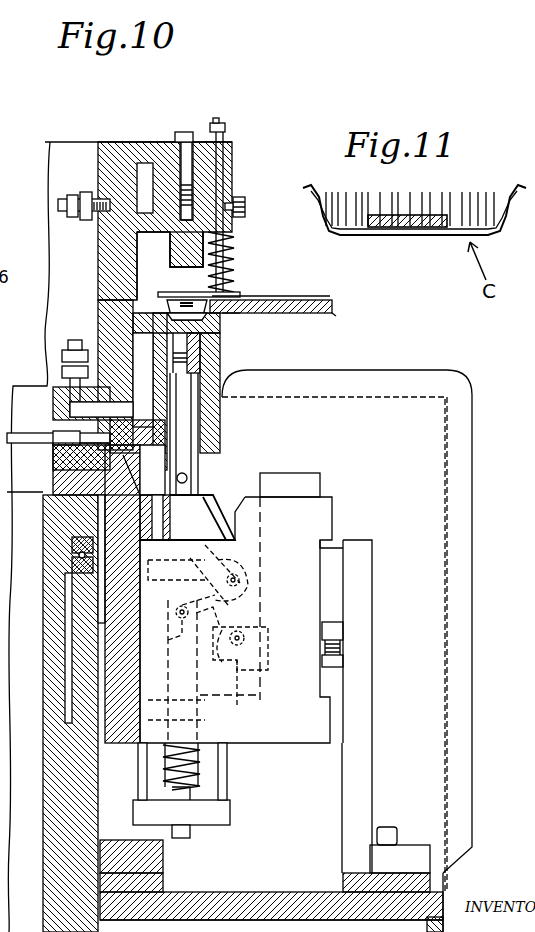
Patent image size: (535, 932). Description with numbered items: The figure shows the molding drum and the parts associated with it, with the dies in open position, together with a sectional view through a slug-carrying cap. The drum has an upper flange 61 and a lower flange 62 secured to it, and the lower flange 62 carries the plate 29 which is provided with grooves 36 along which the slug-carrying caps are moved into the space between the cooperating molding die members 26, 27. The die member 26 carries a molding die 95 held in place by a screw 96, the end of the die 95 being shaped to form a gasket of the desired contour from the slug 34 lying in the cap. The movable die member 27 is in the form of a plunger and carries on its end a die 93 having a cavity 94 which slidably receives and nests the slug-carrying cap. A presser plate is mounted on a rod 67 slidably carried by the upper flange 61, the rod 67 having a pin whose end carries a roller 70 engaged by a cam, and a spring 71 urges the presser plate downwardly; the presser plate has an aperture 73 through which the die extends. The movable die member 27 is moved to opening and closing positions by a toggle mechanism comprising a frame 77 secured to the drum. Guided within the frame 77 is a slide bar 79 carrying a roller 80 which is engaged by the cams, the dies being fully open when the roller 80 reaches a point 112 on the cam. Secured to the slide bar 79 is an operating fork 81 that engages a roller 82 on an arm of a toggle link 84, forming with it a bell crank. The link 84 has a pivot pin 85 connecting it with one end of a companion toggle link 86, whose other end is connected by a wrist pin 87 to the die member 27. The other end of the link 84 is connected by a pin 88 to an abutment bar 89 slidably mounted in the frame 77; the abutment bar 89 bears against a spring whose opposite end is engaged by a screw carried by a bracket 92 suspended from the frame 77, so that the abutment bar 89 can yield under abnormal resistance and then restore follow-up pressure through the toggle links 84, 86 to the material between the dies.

In FIG. 10, the upper flange 61 is at (160, 142).
In FIG. 10, the screw 96 is at (190, 160).
In FIG. 10, the rod 67 is at (224, 172).
In FIG. 10, the roller 70 is at (246, 204).
In FIG. 10, the molding die member 26 is at (172, 250).
In FIG. 10, the molding die 95 is at (178, 268).
In FIG. 10, the spring 71 is at (235, 252).
In FIG. 10, the slug 34 is at (190, 300).
In FIG. 11, the slug 34 is at (398, 235).
In FIG. 10, the cavity 94 is at (222, 303).
In FIG. 10, the aperture 73 is at (176, 293).
In FIG. 10, the grooves 36 is at (300, 304).
In FIG. 10, the plate 29 is at (334, 327).
In FIG. 10, the die 93 is at (224, 318).
In FIG. 10, the lower flange 62 is at (213, 340).
In FIG. 10, the movable die member 27 is at (205, 356).
In FIG. 10, the wrist pin 87 is at (188, 478).
In FIG. 10, the toggle link 86 is at (207, 516).
In FIG. 10, the slide bar 79 is at (312, 480).
In FIG. 10, the pivot pin 85 is at (215, 572).
In FIG. 10, the toggle link 84 is at (206, 586).
In FIG. 10, the pin 88 is at (172, 650).
In FIG. 10, the roller 82 is at (262, 643).
In FIG. 10, the abutment bar 89 is at (195, 705).
In FIG. 10, the operating fork 81 is at (241, 696).
In FIG. 10, the roller 80 is at (335, 636).
In FIG. 10, the point 112 is at (340, 660).
In FIG. 10, the frame 77 is at (300, 718).
In FIG. 10, the bracket 92 is at (239, 817).